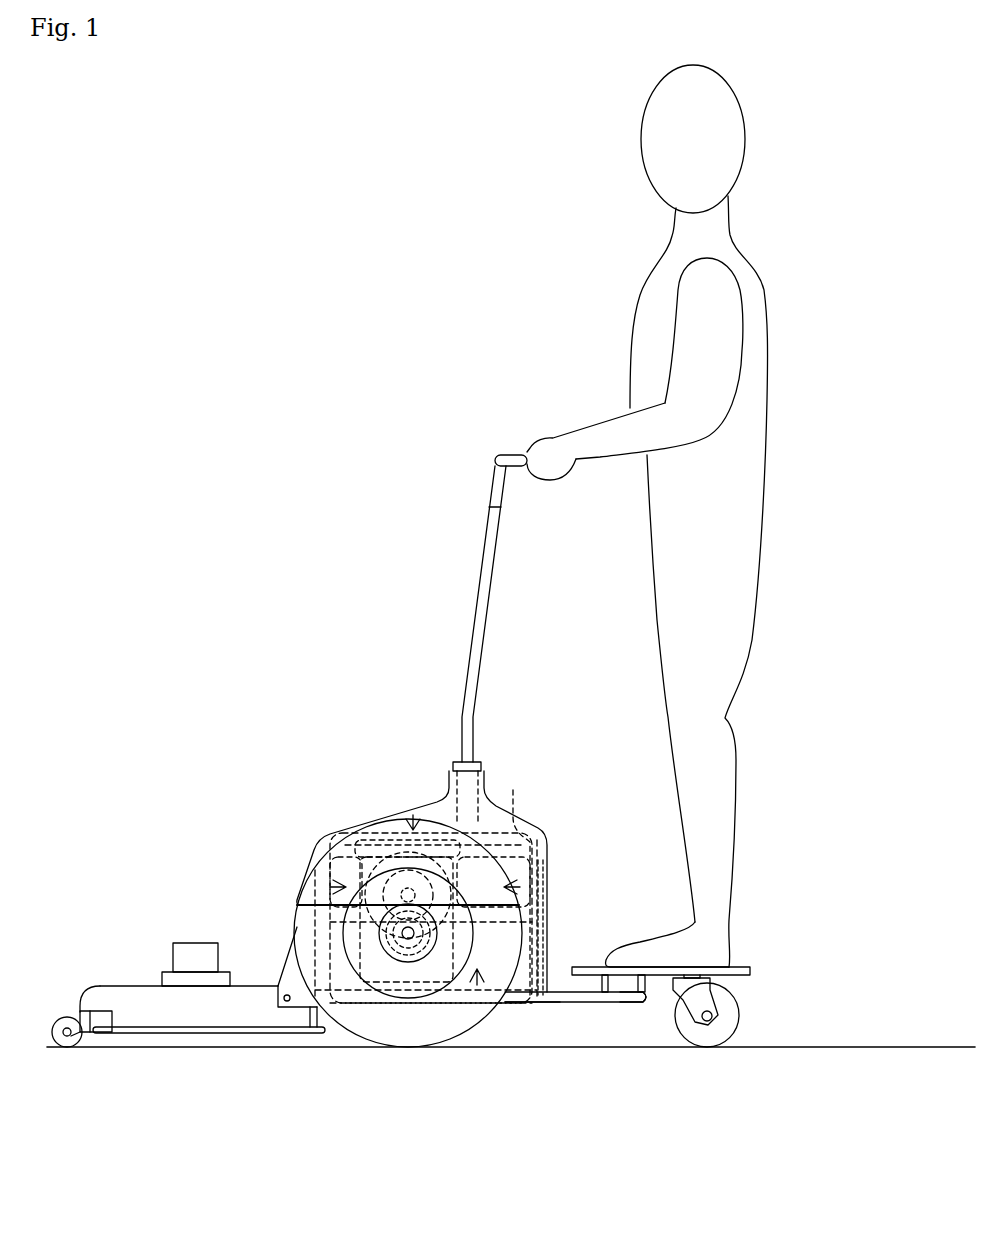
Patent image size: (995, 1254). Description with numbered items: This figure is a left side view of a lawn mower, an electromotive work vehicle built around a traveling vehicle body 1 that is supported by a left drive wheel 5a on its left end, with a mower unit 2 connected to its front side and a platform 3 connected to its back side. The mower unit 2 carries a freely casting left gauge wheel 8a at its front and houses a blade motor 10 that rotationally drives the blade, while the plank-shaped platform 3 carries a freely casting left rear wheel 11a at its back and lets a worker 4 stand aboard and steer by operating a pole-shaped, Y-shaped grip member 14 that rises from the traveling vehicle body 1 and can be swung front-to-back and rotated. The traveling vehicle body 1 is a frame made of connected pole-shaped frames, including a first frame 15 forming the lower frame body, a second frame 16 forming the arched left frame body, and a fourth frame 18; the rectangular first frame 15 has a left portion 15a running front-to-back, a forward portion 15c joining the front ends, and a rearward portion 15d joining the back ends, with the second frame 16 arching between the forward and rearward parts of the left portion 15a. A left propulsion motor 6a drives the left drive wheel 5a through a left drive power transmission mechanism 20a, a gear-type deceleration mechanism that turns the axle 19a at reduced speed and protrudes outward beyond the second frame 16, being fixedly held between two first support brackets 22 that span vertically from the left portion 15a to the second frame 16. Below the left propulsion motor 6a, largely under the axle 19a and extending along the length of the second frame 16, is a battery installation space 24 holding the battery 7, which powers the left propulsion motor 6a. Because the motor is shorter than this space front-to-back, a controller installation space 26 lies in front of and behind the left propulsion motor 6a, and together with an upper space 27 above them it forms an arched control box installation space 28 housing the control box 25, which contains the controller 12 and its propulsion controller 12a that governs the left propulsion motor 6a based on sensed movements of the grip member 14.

The traveling vehicle body 1 is at (301, 855).
The mower unit 2 is at (141, 986).
The platform 3 is at (740, 966).
The worker 4 is at (635, 302).
The left drive wheel 5a is at (423, 1030).
The left propulsion motor 6a is at (413, 891).
The battery 7 is at (552, 935).
The left gauge wheel 8a is at (78, 1012).
The blade motor 10 is at (198, 943).
The left rear wheel 11a is at (706, 1047).
The controller 12 is at (481, 644).
The propulsion controller 12a is at (510, 800).
The grip member 14 is at (518, 452).
The first frame 15 is at (542, 1000).
The left portion 15a is at (516, 1003).
The forward portion 15c is at (307, 1008).
The rearward portion 15d is at (645, 1003).
The second frame 16 is at (552, 858).
The fourth frame 18 is at (440, 787).
The axle 19a is at (406, 938).
The left drive power transmission mechanism 20a is at (297, 950).
The first support bracket 22 is at (320, 838).
The battery installation space 24 is at (487, 1008).
The control box 25 is at (451, 729).
The controller installation space 26 is at (300, 872).
The upper space 27 is at (407, 812).
The control box installation space 28 is at (428, 831).